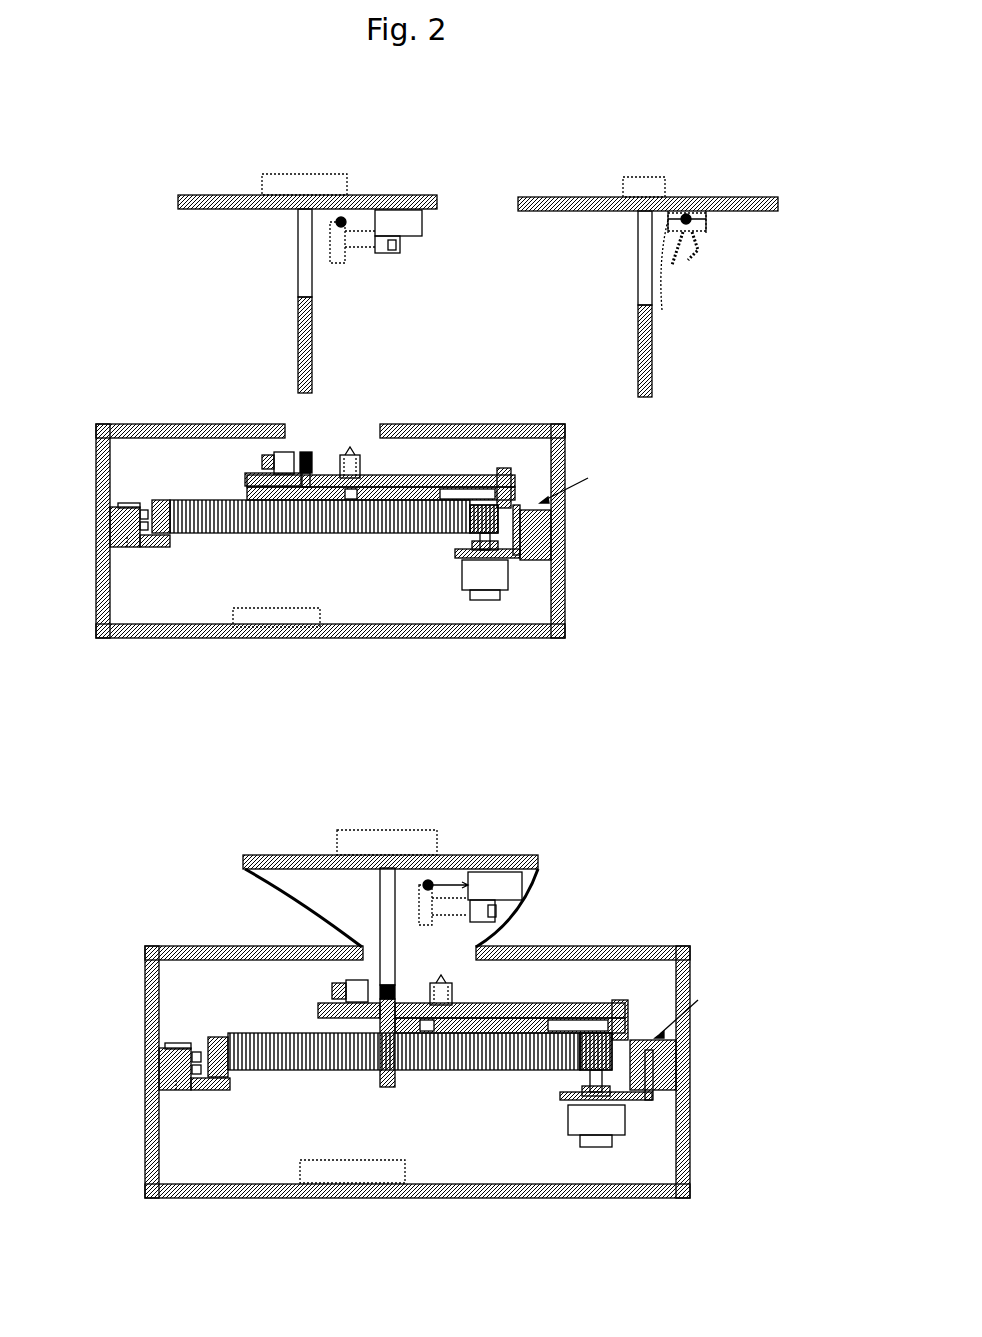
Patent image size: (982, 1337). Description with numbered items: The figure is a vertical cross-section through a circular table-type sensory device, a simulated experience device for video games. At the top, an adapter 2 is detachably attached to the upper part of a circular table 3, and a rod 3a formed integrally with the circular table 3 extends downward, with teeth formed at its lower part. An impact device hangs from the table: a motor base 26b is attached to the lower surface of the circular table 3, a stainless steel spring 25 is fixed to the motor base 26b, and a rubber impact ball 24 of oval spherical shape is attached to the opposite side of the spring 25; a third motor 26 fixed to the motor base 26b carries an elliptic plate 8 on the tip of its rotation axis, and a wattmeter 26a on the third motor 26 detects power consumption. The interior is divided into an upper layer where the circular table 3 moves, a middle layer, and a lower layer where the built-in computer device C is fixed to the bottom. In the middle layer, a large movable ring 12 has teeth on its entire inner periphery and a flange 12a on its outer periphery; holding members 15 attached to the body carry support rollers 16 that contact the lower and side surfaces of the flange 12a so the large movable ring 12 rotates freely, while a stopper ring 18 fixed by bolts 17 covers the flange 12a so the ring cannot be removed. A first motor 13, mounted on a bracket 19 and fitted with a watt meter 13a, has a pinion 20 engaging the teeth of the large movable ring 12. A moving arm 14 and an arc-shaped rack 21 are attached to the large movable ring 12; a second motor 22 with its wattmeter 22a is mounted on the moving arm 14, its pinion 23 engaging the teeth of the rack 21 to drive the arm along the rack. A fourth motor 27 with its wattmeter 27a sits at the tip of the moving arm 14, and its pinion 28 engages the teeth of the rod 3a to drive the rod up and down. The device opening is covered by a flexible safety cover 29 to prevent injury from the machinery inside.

The adapter 2 is at (338, 183).
The circular table 3 is at (228, 200).
The rod 3a is at (300, 287).
The elliptic plate 8 is at (340, 255).
The large movable ring 12 is at (160, 500).
The flange 12a is at (505, 500).
The first motor 13 is at (462, 575).
The watt meter 13a is at (482, 601).
The moving arm 14 is at (247, 480).
The holding members 15 is at (127, 547).
The support rollers 16 is at (96, 533).
The bolts 17 is at (122, 503).
The stopper ring 18 is at (142, 508).
The bracket 19 is at (518, 558).
The pinion 20 is at (445, 533).
The rack 21 is at (460, 476).
The second motor 22 is at (360, 465).
The wattmeter 22a is at (350, 446).
The pinion 23 is at (370, 533).
The impact ball 24 is at (335, 222).
The spring 25 is at (357, 222).
The third motor 26 is at (385, 250).
The wattmeter 26a is at (403, 247).
The motor base 26b is at (422, 218).
The fourth motor 27 is at (285, 455).
The wattmeter 27a is at (262, 465).
The pinion 28 is at (308, 452).
The safety cover 29 is at (290, 908).
The built-in computer device C is at (295, 620).